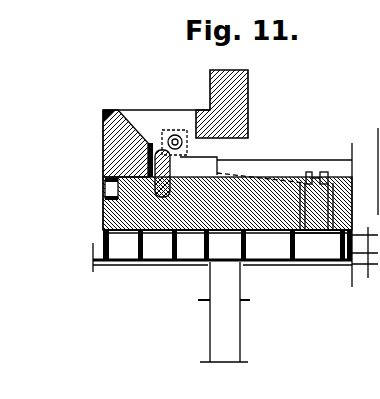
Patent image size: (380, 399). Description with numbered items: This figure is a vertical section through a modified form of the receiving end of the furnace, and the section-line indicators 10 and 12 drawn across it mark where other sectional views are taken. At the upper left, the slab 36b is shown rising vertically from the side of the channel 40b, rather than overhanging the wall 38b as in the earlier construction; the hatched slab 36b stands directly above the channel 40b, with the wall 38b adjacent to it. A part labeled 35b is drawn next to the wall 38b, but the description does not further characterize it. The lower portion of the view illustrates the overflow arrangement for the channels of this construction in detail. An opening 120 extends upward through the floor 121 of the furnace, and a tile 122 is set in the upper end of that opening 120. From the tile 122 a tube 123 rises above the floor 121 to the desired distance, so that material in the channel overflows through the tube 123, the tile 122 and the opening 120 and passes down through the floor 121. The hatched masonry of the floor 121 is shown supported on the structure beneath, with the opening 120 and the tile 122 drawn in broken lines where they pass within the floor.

The slab 36b is at (106, 128).
The channel 40b is at (107, 172).
The wall 38b is at (170, 168).
The plate 35b is at (258, 172).
The tube 123 is at (309, 172).
The tile 122 is at (330, 172).
The floor 121 is at (269, 232).
The opening 120 is at (308, 236).
The section line 10- 10 is at (157, 143).
The section line 12- 12 is at (152, 143).